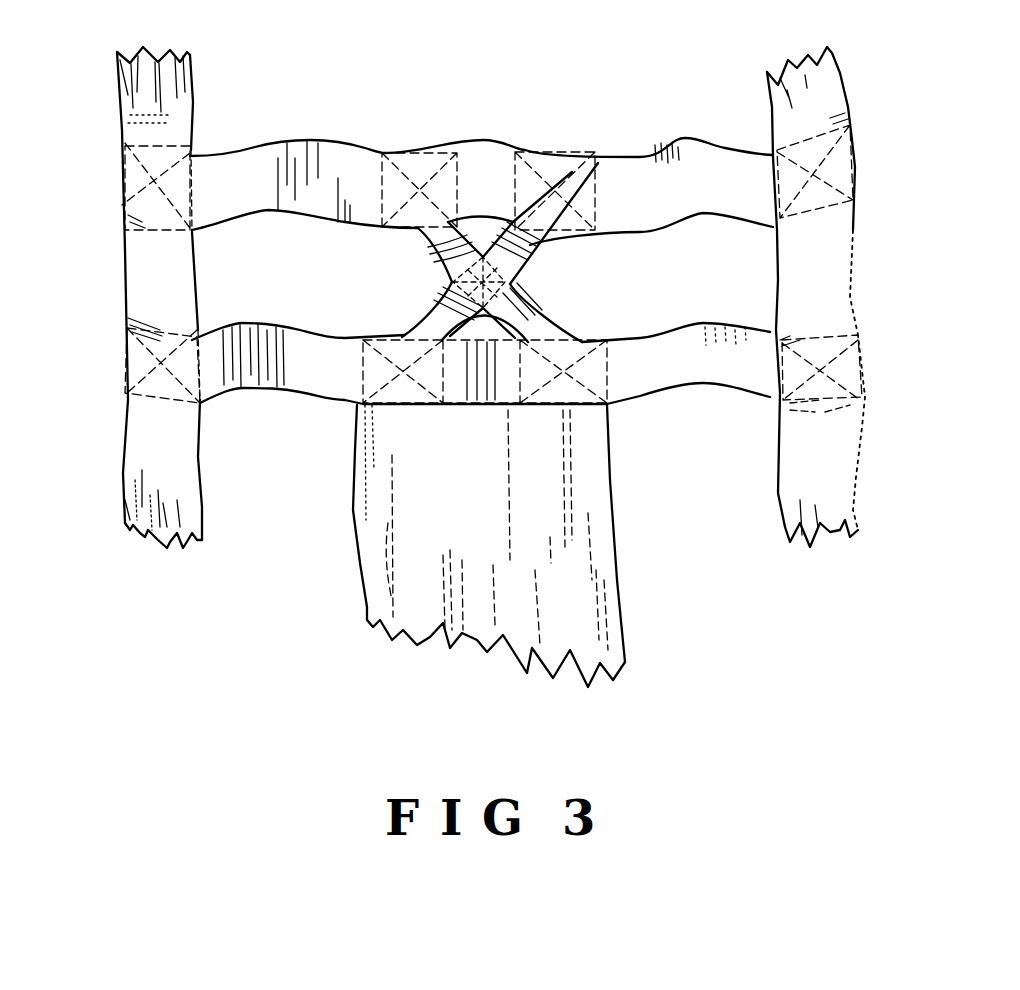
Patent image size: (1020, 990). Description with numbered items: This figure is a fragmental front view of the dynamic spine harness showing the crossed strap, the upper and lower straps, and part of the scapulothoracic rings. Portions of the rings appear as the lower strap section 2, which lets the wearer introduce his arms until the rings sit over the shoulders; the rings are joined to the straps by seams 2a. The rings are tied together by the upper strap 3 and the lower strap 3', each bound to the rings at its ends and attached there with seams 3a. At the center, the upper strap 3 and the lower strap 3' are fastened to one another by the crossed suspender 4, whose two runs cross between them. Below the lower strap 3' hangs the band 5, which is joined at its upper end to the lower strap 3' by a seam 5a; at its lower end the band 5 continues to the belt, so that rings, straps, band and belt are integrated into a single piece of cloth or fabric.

The lower strap section 2 is at (147, 267).
The seam 2a is at (135, 173).
The upper strap 3 is at (481, 147).
The lower strap 3' is at (481, 413).
The seam 3a is at (423, 167).
The crossed suspender 4 is at (540, 248).
The band 5 is at (573, 580).
The seam 5a is at (490, 372).